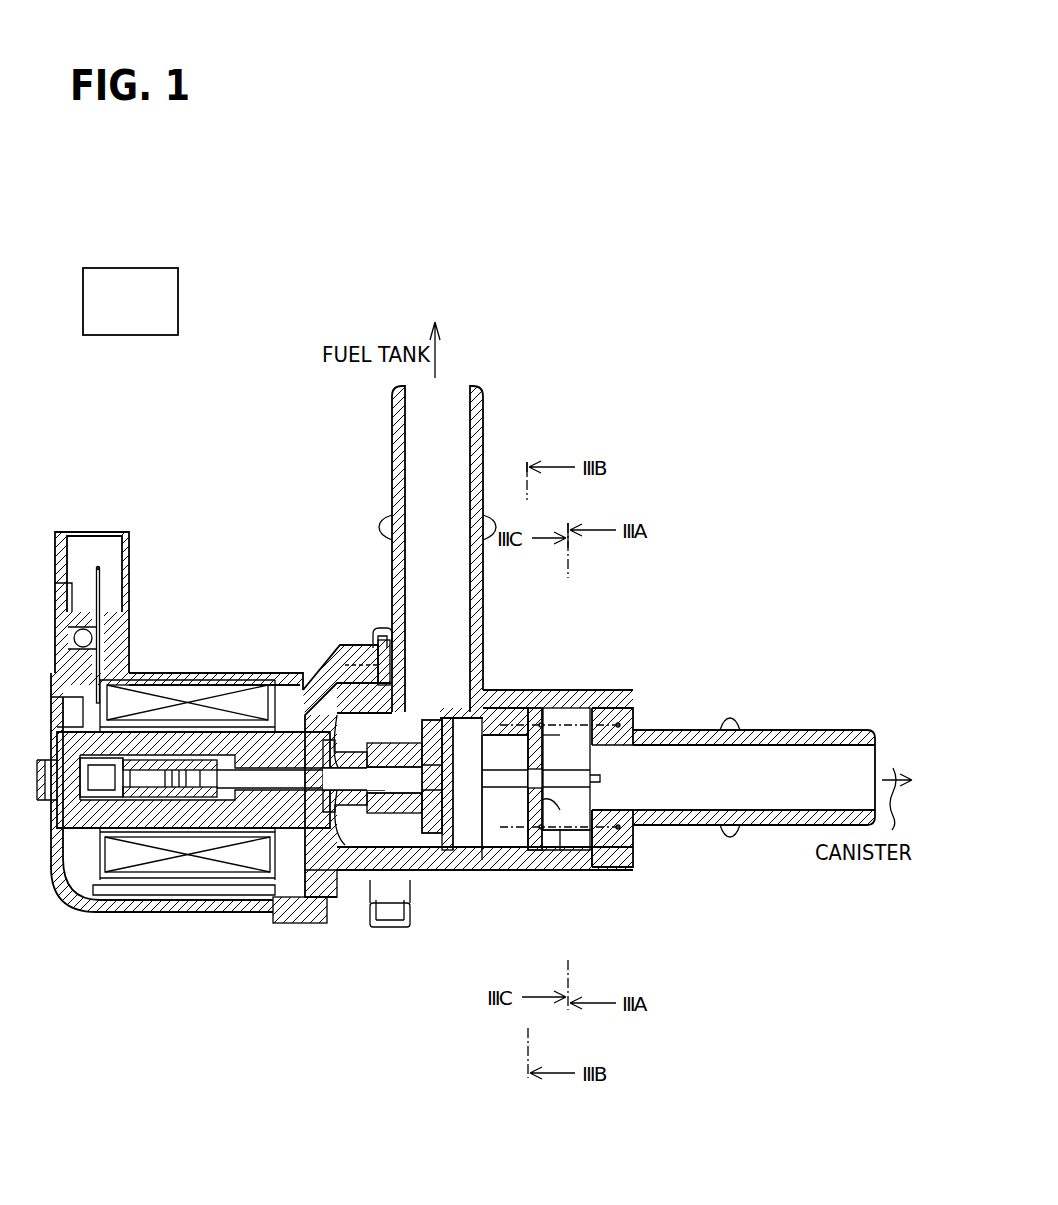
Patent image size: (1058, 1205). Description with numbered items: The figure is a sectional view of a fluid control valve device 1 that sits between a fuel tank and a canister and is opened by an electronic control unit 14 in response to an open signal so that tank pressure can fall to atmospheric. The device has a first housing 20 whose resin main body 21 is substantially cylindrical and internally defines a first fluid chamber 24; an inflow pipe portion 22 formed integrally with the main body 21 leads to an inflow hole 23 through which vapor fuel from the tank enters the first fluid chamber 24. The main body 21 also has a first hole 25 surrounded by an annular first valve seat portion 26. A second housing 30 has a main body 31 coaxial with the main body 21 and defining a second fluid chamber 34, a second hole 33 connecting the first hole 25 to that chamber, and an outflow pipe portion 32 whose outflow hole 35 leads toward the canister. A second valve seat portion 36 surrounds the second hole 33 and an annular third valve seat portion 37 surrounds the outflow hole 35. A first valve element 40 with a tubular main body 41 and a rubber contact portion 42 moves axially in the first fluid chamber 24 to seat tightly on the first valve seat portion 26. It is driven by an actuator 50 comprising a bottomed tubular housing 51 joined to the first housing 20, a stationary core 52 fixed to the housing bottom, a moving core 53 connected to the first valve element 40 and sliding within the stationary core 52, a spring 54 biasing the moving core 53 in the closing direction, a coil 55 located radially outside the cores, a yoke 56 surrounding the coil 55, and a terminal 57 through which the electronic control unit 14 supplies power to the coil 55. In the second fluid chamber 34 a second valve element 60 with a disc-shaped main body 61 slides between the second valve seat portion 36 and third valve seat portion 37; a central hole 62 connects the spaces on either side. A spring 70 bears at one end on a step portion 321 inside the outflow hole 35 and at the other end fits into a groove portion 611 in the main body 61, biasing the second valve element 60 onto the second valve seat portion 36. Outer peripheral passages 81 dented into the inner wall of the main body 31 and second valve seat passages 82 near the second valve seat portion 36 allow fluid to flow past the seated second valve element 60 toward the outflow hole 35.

The fluid control valve device 1 is at (623, 300).
The electronic control unit (ECU) 14 is at (127, 268).
The first housing 20 is at (352, 680).
The main body 21 is at (337, 885).
The inflow pipe portion 22 is at (395, 436).
The inflow hole 23 is at (410, 698).
The first fluid chamber 24 is at (428, 852).
The first hole 25 is at (483, 828).
The first valve seat portion 26 is at (450, 852).
The second housing 30 is at (624, 690).
The main body 31 is at (520, 725).
The outflow pipe portion 32 is at (757, 730).
The second hole 33 is at (512, 720).
The second fluid chamber 34 is at (580, 750).
The outflow hole 35 is at (630, 806).
The second valve seat portion 36 is at (540, 852).
The third valve seat portion 37 is at (585, 850).
The first valve element 40 is at (397, 872).
The main body 41 is at (362, 858).
The contact portion 42 is at (474, 850).
The actuator 50 is at (162, 928).
The housing 51 is at (212, 912).
The stationary core 52 is at (160, 760).
The moving core 53 is at (258, 758).
The spring 54 is at (191, 748).
The coil 55 is at (187, 876).
The yoke 56 is at (248, 896).
The terminal 57 is at (98, 566).
The second valve element 60 is at (531, 706).
The main body 61 is at (545, 852).
The groove portion 611 is at (560, 850).
The hole 62 is at (618, 781).
The spring 70 is at (597, 720).
The outer peripheral passages 81 is at (557, 730).
The second valve seat passages 82 is at (505, 862).
The step portion 321 is at (612, 845).